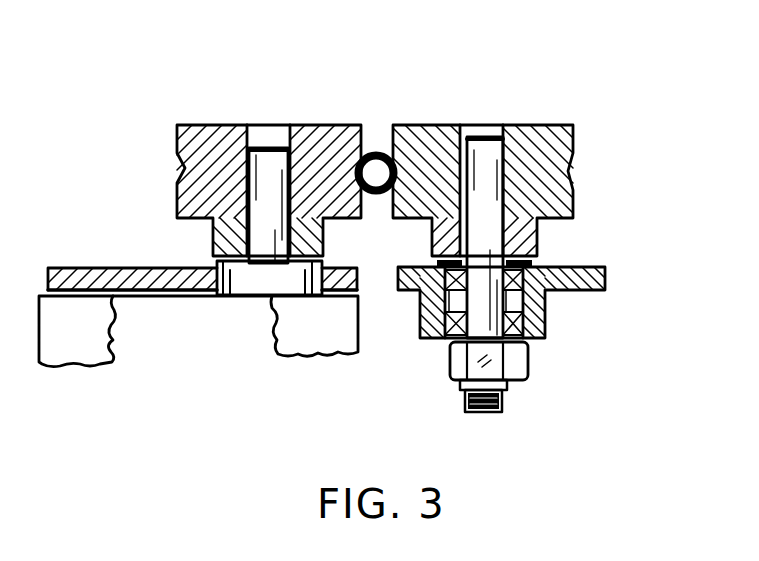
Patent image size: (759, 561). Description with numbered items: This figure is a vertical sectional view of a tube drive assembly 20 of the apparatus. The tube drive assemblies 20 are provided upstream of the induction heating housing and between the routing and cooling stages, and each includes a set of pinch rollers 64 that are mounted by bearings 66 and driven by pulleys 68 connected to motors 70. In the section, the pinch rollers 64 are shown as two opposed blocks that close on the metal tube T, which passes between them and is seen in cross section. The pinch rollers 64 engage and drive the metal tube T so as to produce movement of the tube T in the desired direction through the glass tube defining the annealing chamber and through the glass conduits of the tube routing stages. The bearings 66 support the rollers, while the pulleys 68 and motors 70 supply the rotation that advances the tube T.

The tube drive assembly 20 is at (600, 111).
The pinch rollers 64 is at (228, 125).
The metal tube T is at (373, 151).
The bearings 66 is at (335, 337).
The pulleys 68 is at (203, 303).
The motors 70 is at (110, 338).